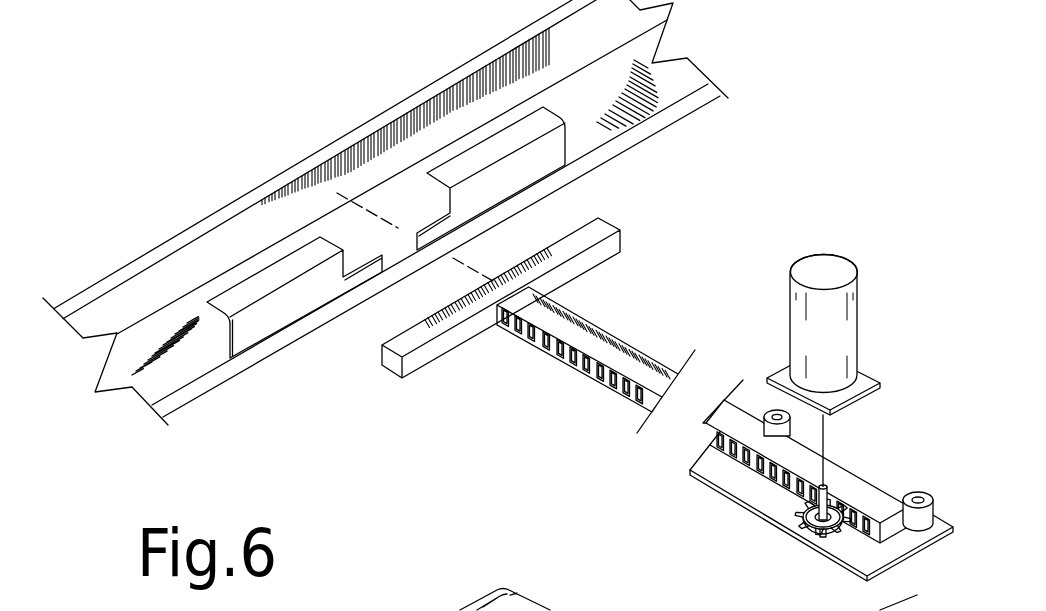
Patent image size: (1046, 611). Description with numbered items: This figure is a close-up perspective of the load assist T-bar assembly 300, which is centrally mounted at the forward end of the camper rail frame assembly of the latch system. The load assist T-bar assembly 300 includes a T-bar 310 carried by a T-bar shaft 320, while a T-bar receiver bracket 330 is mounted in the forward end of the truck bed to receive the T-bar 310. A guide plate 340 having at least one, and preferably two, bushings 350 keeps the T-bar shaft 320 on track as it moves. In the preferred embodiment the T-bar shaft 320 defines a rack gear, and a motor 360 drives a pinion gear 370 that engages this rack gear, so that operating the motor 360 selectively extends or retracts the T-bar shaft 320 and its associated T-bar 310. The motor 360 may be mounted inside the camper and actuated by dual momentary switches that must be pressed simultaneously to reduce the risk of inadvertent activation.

The load assist T-bar assembly 300 is at (50, 370).
The T-bar 310 is at (608, 222).
The T-bar shaft 320 is at (638, 362).
The T-bar receiver bracket 330 is at (365, 235).
The guide plate 340 is at (753, 495).
The bushings 350 is at (767, 408).
The motor 360 is at (835, 330).
The pinion gear 370 is at (804, 531).